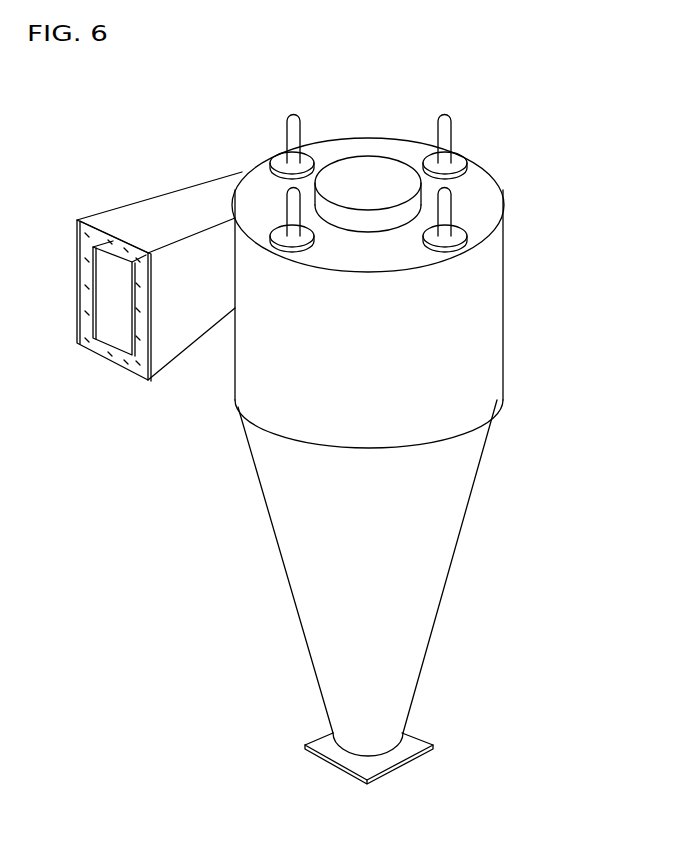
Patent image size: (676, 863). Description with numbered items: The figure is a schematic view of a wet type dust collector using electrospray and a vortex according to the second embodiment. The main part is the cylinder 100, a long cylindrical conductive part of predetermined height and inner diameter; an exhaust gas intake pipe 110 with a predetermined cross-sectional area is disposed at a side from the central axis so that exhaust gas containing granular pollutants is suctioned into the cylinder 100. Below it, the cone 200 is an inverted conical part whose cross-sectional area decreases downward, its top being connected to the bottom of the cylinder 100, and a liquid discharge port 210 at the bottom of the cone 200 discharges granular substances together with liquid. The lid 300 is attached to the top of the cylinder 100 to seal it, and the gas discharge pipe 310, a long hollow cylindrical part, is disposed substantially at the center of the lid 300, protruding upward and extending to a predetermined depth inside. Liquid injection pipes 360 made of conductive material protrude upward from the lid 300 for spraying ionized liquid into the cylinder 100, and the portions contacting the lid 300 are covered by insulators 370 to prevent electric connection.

The cylinder 100 is at (268, 397).
The exhaust gas intake pipe 110 is at (165, 208).
The cone 200 is at (315, 568).
The liquid discharge port 210 is at (393, 762).
The lid 300 is at (472, 190).
The gas discharge pipe 310 is at (300, 195).
The liquid injection pipe 360 is at (453, 209).
The insulator 370 is at (470, 245).